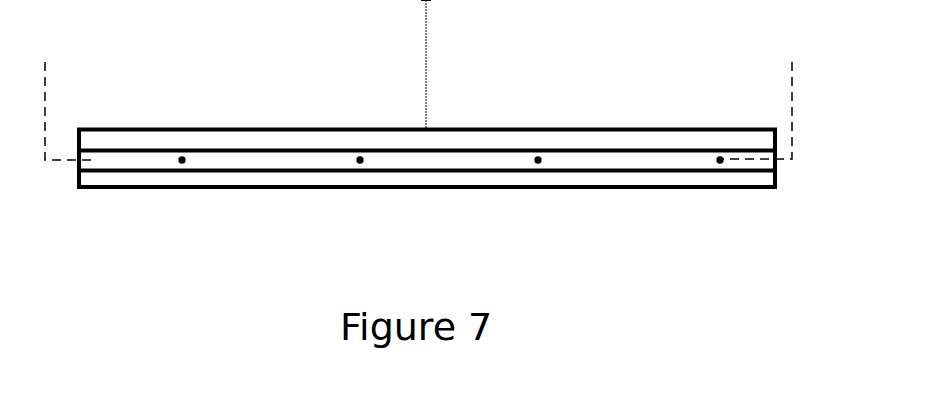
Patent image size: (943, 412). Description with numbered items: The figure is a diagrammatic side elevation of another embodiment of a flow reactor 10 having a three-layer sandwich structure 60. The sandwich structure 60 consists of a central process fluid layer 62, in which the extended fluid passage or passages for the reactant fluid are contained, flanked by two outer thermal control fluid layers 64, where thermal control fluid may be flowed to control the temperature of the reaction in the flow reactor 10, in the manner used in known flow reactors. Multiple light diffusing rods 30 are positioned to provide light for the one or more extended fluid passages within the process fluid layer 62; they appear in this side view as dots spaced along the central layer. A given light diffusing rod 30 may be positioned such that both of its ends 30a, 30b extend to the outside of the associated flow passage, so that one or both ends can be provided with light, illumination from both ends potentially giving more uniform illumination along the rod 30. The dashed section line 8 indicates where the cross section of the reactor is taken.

The section line 8 is at (45, 62).
The flow reactor 10 is at (255, 267).
The light diffusing rods 30 is at (283, 194).
The first end of light diffusing rod 30a is at (550, 195).
The second end of light diffusing rod 30b is at (700, 195).
The sandwich structure 60 is at (465, 193).
The central process fluid layer 62 is at (264, 157).
The outer thermal control fluid layers 64 is at (460, 177).